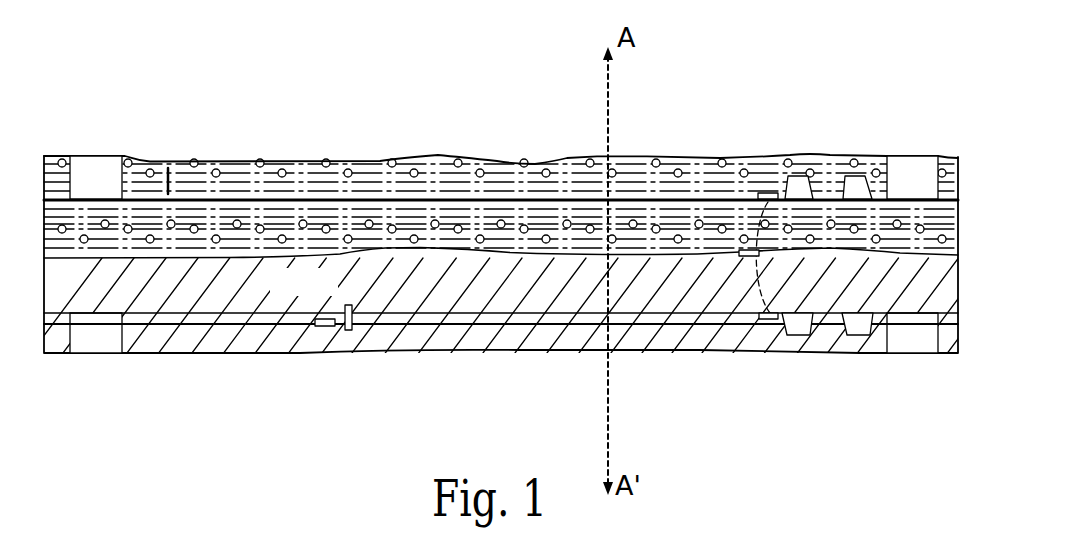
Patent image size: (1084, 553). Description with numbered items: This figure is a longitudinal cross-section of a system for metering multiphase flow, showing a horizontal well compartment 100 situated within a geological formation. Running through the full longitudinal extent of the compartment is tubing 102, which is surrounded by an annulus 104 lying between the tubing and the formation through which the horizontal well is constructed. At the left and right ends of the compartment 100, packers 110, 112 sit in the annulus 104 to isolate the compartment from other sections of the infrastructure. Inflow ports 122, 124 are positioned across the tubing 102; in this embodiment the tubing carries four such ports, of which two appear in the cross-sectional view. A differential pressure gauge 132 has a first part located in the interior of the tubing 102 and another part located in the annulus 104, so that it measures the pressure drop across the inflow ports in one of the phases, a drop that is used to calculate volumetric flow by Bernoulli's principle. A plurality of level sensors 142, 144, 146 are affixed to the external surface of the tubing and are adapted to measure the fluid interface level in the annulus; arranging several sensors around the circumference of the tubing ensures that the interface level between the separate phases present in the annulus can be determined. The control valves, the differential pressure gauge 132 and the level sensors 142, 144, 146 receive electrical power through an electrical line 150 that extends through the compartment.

The horizontal well compartment 100 is at (150, 80).
The tubing 102 is at (333, 190).
The annulus 104 is at (177, 170).
The packer 110 is at (91, 342).
The packer 112 is at (913, 168).
The inflow port 122 is at (828, 330).
The inflow port 124 is at (825, 168).
The differential pressure gauge 132 is at (334, 342).
The level sensor 142 is at (768, 320).
The level sensor 144 is at (755, 238).
The level sensor 146 is at (770, 193).
The electrical line 150 is at (181, 335).